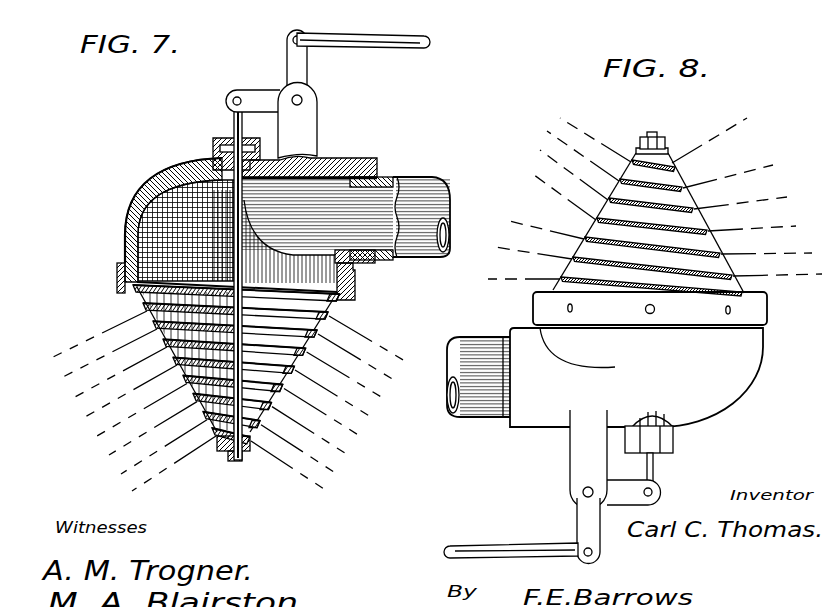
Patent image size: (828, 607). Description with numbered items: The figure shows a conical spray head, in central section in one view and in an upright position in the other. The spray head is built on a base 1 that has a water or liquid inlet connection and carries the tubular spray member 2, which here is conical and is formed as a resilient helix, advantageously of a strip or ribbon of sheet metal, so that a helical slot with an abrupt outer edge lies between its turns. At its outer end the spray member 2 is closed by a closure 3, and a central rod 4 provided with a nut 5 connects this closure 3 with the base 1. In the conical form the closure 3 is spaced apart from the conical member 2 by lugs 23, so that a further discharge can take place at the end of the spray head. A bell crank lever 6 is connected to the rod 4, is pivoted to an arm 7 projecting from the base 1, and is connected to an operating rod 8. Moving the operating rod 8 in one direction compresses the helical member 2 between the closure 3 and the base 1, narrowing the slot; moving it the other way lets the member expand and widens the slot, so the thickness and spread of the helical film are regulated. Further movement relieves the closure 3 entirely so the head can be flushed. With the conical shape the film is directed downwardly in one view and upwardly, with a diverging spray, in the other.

In FIG. 7, the base 1 is at (163, 196).
In FIG. 8, the base 1 is at (722, 377).
In FIG. 7, the tubular spray member 2 is at (300, 355).
In FIG. 8, the tubular spray member 2 is at (680, 200).
In FIG. 7, the closure 3 is at (222, 445).
In FIG. 7, the rod 4 is at (233, 124).
In FIG. 8, the rod 4 is at (655, 473).
In FIG. 7, the nut 5 is at (243, 456).
In FIG. 8, the nut 5 is at (665, 150).
In FIG. 7, the bell crank lever 6 is at (300, 70).
In FIG. 8, the bell crank lever 6 is at (578, 518).
In FIG. 7, the arm 7 is at (307, 132).
In FIG. 8, the arm 7 is at (575, 460).
In FIG. 7, the operating rod 8 is at (368, 36).
In FIG. 8, the operating rod 8 is at (503, 552).
In FIG. 8, the lugs 23 is at (668, 156).